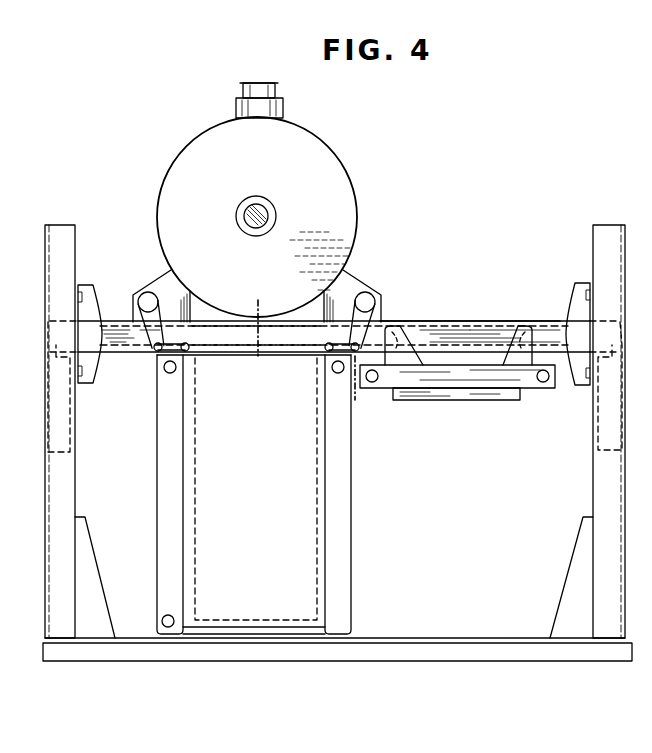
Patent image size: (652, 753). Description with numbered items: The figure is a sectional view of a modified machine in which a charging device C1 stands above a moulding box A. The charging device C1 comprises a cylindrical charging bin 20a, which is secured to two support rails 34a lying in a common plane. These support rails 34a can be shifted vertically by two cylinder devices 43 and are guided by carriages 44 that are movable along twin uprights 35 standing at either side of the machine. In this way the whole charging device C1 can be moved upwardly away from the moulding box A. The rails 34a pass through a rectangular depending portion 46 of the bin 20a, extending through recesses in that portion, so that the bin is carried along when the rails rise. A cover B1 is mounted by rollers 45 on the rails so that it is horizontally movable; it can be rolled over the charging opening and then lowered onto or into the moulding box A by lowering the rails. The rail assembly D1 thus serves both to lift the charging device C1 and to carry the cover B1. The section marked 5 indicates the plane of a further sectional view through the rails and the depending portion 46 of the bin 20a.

The section line 5- 5 is at (258, 30).
The twin uprights 35 is at (67, 470).
The cylinder devices 43 is at (78, 410).
The support rails 34a is at (488, 336).
The bar assembly D1 is at (444, 323).
The rectangular depending portion 46 is at (228, 330).
The carriages 44 is at (99, 303).
The moulding box A is at (155, 503).
The cover B1 is at (477, 408).
The rollers 45 is at (403, 340).
The charging device C1 is at (332, 150).
The cylindrical charging bin 20a is at (342, 218).